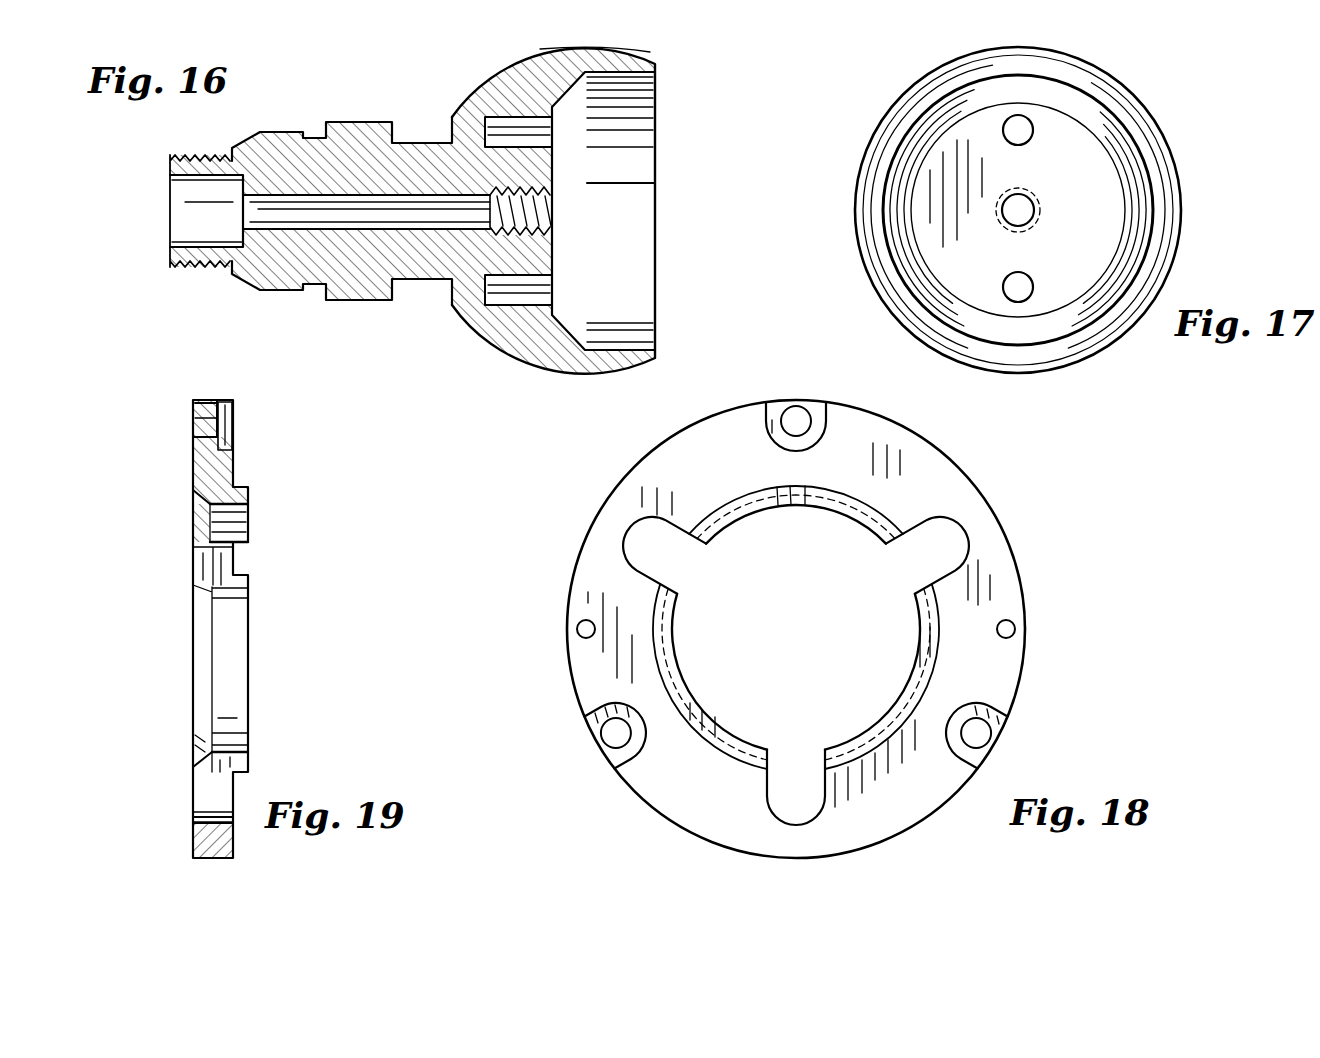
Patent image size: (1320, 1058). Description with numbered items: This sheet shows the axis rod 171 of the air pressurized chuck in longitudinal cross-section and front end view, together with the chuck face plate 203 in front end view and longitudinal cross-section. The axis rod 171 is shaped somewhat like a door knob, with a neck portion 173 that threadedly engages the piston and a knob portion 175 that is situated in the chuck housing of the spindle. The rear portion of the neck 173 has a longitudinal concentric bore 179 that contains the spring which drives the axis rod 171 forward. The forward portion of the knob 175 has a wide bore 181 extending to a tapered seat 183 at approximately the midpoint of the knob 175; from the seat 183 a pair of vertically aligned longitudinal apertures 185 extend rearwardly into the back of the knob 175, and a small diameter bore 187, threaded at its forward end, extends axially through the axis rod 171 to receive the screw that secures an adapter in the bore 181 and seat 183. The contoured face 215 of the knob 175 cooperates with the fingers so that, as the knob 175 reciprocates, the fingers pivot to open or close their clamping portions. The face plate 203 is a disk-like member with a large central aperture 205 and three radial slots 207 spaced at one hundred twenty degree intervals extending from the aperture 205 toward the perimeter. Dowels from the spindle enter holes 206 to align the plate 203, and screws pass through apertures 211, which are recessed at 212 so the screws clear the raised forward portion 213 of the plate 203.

In FIG. 16, the axis rod 171 is at (436, 108).
In FIG. 16, the neck portion 173 is at (299, 158).
In FIG. 16, the knob portion 175 is at (517, 90).
In FIG. 17, the knob portion 175 is at (1122, 82).
In FIG. 16, the longitudinal concentric bore 179 is at (186, 210).
In FIG. 16, the wide bore 181 is at (627, 132).
In FIG. 17, the wide bore 181 is at (1148, 197).
In FIG. 16, the tapered seat 183 is at (573, 288).
In FIG. 17, the tapered seat 183 is at (1130, 156).
In FIG. 16, the longitudinal apertures 185 is at (513, 300).
In FIG. 17, the longitudinal apertures 185 is at (1025, 131).
In FIG. 16, the small diameter bore 187 is at (531, 226).
In FIG. 16, the opposing face of the knob 215 is at (592, 45).
In FIG. 18, the chuck face plate 203 is at (930, 478).
In FIG. 19, the chuck face plate 203 is at (193, 620).
In FIG. 18, the central aperture 205 is at (873, 648).
In FIG. 18, the holes 206 is at (577, 628).
In FIG. 18, the radial slots 207 is at (948, 525).
In FIG. 19, the radial slots 207 is at (210, 563).
In FIG. 18, the apertures 211 is at (800, 410).
In FIG. 19, the apertures 211 is at (203, 433).
In FIG. 18, the recess 212 is at (773, 415).
In FIG. 19, the recess 212 is at (228, 402).
In FIG. 18, the raised forward portion 213 is at (748, 487).
In FIG. 19, the raised forward portion 213 is at (250, 497).